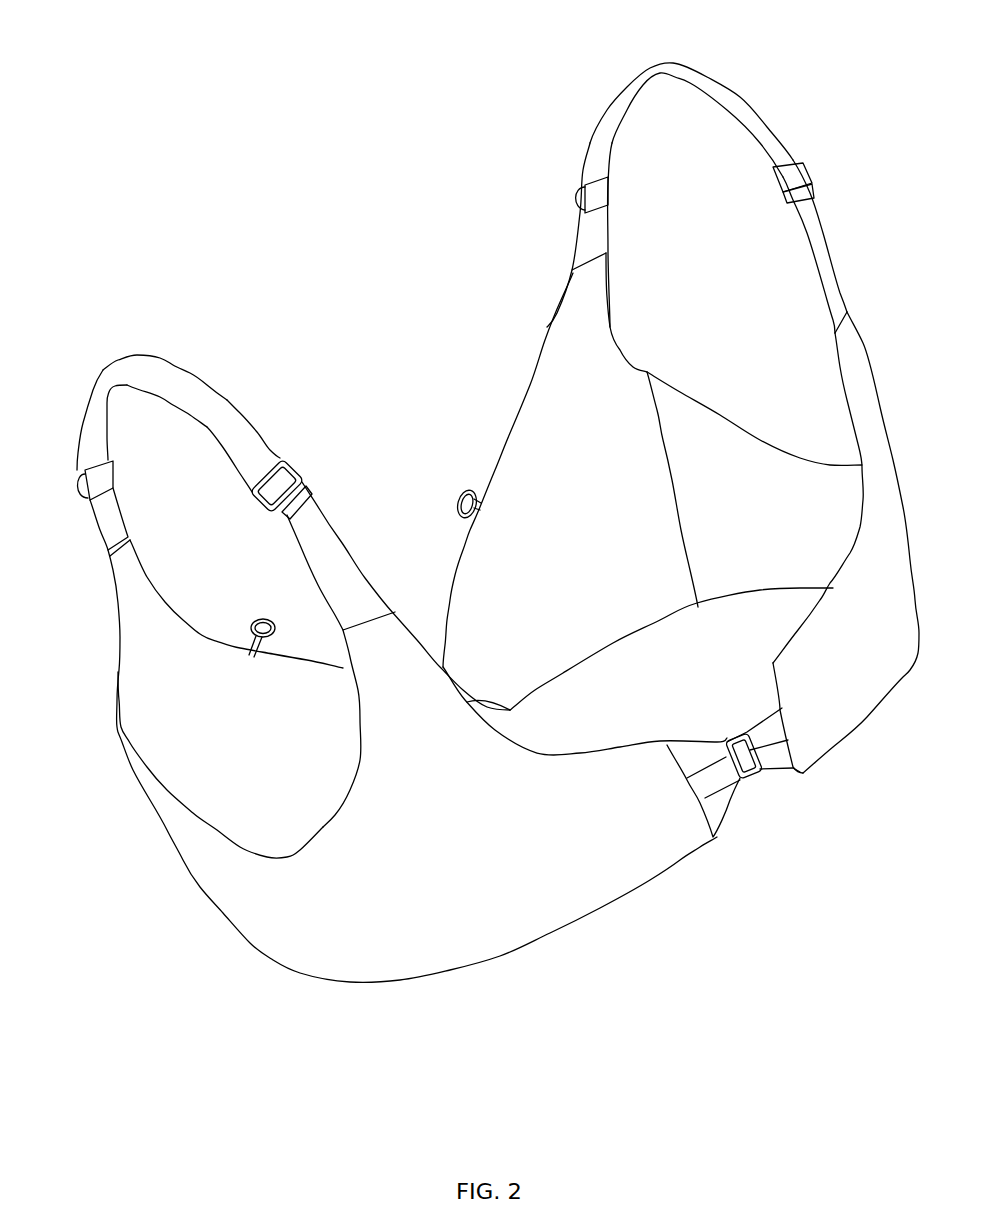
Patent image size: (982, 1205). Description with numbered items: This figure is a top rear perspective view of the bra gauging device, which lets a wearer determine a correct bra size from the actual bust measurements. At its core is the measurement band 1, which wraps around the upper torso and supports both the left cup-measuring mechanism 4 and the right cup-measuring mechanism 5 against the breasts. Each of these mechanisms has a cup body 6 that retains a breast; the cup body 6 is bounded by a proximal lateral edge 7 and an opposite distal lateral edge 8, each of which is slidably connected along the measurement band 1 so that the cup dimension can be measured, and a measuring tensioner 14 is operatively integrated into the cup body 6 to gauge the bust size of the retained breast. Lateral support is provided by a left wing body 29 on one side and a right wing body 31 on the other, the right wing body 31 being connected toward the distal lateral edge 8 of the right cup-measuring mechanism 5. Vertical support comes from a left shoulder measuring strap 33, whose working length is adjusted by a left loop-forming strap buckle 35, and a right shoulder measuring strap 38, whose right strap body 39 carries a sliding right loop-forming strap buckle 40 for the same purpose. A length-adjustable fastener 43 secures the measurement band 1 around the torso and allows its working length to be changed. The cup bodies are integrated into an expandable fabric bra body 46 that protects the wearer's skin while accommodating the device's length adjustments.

The measurement band 1 is at (768, 733).
The left cup-measuring mechanism 4 is at (92, 660).
The right cup-measuring mechanism 5 is at (468, 418).
The cup body 6 is at (537, 407).
The proximal lateral edge 7 is at (514, 692).
The distal lateral edge 8 is at (641, 375).
The measuring tensioner 14 is at (231, 623).
The left wing body 29 is at (807, 575).
The right wing body 31 is at (900, 665).
The left shoulder measuring strap 33 is at (178, 353).
The left loop-forming strap buckle 35 is at (290, 466).
The right shoulder measuring strap 38 is at (731, 76).
The right strap body 39 is at (626, 92).
The right loop-forming strap buckle 40 is at (773, 177).
The length-adjustable fastener 43 is at (727, 740).
The bra body 46 is at (790, 772).